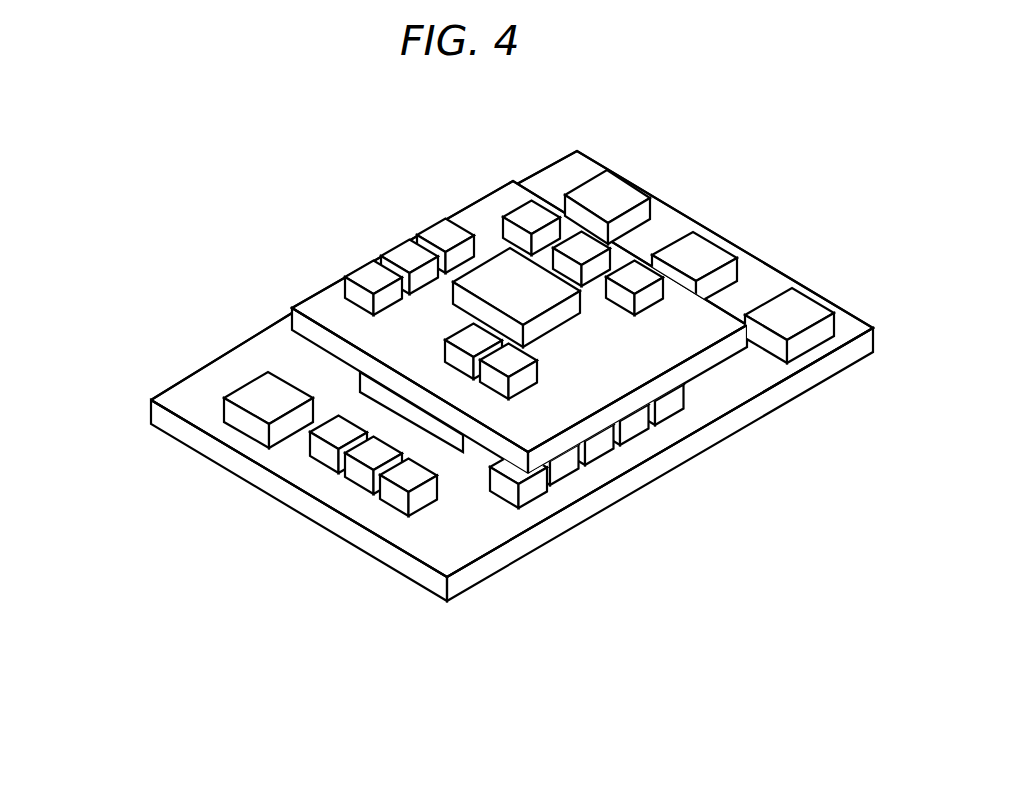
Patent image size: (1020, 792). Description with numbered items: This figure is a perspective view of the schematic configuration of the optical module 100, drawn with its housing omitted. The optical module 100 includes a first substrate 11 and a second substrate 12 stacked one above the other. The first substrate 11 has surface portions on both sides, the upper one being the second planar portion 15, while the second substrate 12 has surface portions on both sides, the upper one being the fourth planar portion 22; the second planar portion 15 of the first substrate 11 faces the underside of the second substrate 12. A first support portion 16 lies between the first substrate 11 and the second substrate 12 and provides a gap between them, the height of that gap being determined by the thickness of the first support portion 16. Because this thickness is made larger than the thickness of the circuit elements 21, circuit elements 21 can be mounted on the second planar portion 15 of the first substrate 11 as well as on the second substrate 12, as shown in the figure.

The optical module 100 is at (813, 113).
The first substrate 11 is at (158, 417).
The second planar portion 15 is at (193, 398).
The first support portion 16 is at (447, 435).
The second substrate 12 is at (306, 325).
The fourth planar portion 22 is at (335, 303).
The circuit elements 21 is at (247, 423).